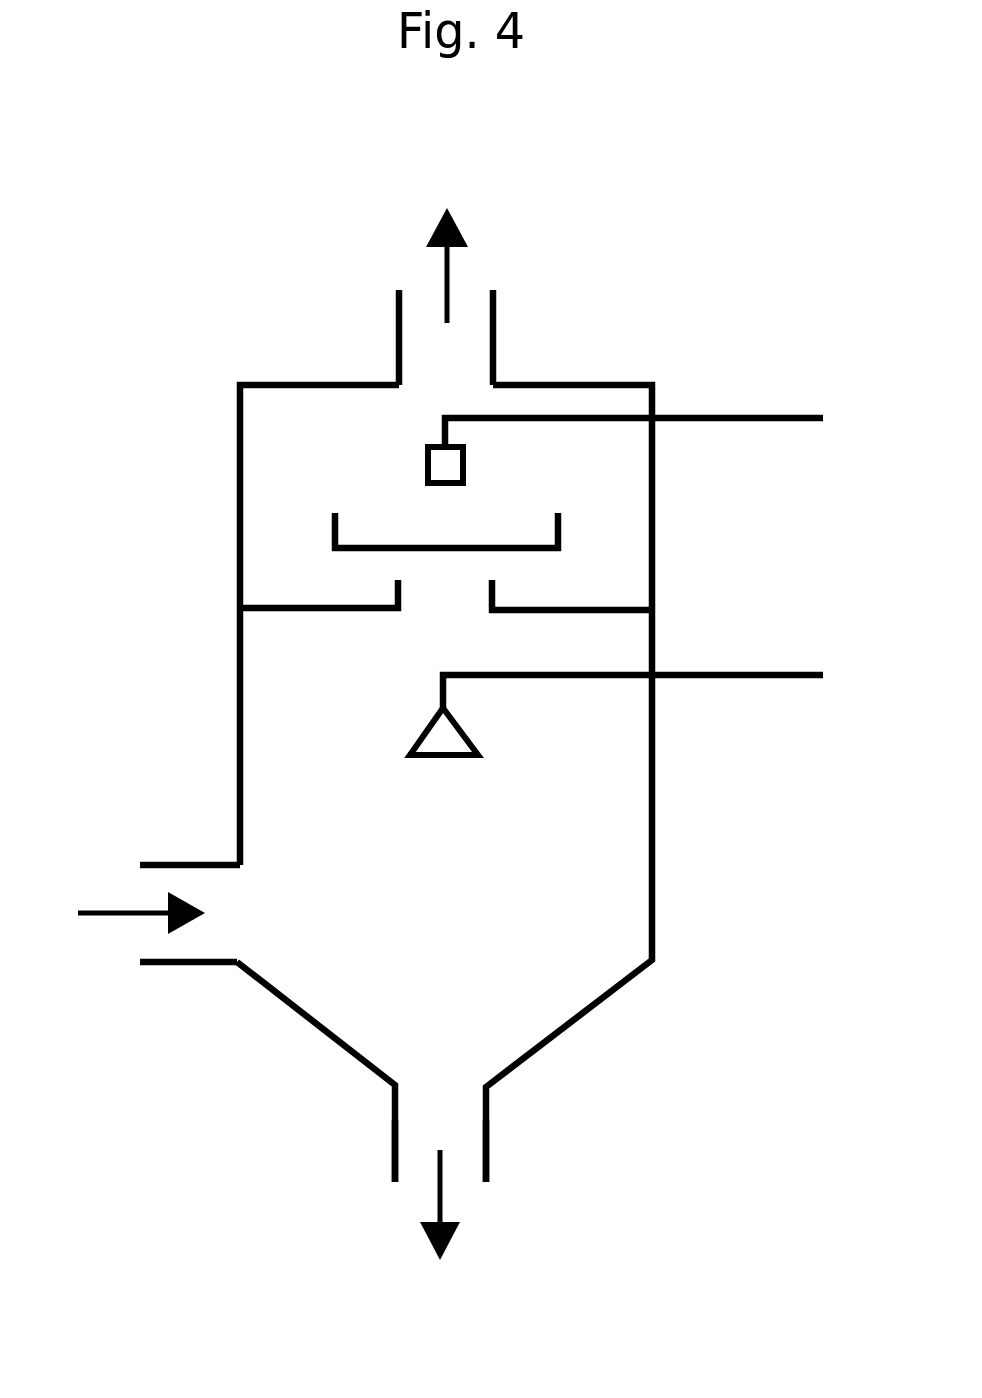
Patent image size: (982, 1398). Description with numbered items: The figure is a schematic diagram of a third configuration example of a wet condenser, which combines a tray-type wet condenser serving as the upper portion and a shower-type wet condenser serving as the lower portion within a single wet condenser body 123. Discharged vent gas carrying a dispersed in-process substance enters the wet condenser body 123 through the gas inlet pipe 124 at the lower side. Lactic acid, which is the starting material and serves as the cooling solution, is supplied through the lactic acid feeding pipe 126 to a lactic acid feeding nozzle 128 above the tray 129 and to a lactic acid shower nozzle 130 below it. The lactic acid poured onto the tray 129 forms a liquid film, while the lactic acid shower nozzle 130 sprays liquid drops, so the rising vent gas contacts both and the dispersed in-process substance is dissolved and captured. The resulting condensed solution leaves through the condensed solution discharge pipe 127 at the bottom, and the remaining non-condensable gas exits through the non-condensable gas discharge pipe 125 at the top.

The wet condenser body 123 is at (652, 523).
The gas inlet pipe 124 is at (187, 962).
The non-condensable gas discharge pipe 125 is at (399, 322).
The lactic acid feeding pipe 126 is at (707, 418).
The condensed solution discharge pipe 127 is at (486, 1137).
The lactic acid feeding nozzle 128 is at (428, 465).
The tray 129 is at (293, 608).
The lactic acid shower nozzle 130 is at (427, 740).